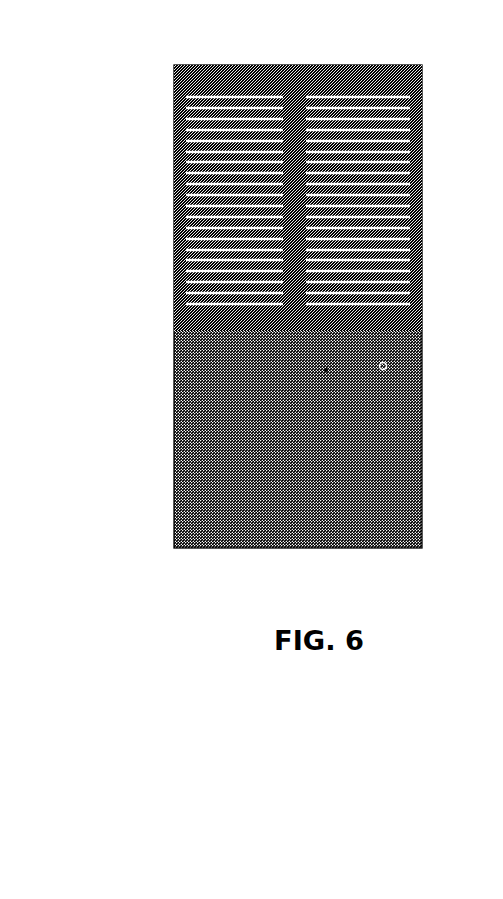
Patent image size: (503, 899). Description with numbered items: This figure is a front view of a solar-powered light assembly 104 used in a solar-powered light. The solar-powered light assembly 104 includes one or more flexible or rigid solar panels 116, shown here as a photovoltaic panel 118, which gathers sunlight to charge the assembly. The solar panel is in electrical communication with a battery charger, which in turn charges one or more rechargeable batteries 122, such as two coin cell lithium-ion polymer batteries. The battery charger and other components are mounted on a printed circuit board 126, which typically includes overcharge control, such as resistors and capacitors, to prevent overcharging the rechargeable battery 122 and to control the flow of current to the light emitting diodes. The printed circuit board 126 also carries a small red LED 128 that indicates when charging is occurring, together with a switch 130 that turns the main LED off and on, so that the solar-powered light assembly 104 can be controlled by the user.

The solar-powered light assembly 104 is at (125, 282).
The solar panel 116 is at (230, 181).
The photovoltaic panel 118 is at (270, 85).
The rechargeable battery 122 is at (320, 477).
The printed circuit board 126 is at (241, 374).
The red LED 128 is at (318, 362).
The switch 130 is at (378, 360).